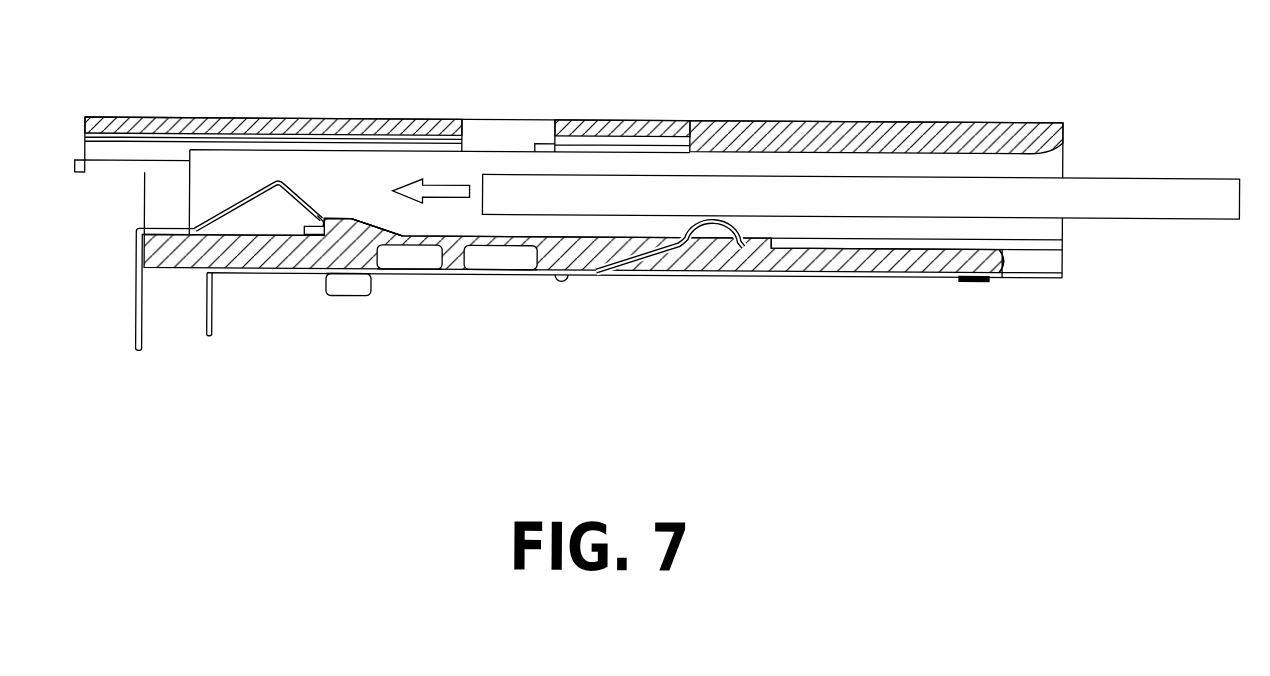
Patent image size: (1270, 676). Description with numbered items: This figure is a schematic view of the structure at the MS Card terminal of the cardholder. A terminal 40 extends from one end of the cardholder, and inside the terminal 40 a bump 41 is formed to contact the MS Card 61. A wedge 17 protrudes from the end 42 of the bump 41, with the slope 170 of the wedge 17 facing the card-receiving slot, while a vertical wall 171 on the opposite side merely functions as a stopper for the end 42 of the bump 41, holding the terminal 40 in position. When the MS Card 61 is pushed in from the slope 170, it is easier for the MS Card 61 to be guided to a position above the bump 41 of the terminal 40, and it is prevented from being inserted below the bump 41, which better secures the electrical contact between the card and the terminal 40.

The wedge 17 is at (346, 228).
The slope 170 is at (368, 222).
The vertical wall 171 is at (306, 236).
The terminal 40 is at (138, 300).
The bump 41 is at (268, 183).
The end of the bump 42 is at (316, 216).
The MS Card 61 is at (518, 188).